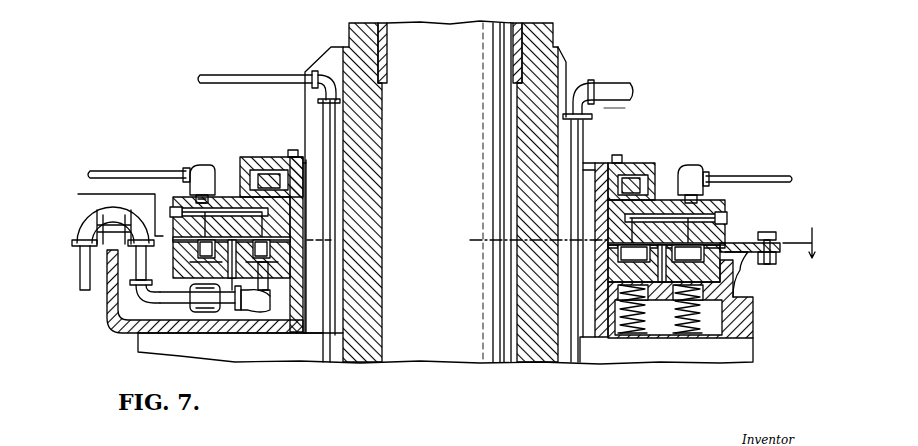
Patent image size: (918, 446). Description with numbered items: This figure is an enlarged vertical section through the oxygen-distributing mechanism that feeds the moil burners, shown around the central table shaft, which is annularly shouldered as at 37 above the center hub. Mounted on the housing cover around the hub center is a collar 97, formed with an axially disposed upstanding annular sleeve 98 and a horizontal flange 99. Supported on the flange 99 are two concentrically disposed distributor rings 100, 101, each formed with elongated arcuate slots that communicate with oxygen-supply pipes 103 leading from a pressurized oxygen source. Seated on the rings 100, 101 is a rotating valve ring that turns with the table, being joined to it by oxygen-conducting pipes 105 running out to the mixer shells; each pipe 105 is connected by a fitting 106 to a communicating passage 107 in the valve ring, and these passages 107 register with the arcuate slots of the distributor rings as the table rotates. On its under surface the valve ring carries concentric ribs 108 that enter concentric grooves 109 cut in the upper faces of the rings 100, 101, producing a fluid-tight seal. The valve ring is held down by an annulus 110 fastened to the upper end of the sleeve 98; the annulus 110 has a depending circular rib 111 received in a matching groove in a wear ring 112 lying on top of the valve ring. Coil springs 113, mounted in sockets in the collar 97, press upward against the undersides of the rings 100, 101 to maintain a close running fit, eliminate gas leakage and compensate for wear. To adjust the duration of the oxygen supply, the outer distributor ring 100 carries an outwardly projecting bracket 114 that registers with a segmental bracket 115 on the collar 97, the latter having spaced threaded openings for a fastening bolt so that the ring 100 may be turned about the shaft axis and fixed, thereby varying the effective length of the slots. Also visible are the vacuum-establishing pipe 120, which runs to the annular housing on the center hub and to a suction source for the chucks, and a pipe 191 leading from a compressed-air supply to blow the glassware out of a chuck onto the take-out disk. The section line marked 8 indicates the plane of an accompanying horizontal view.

The section line 8- 8 is at (446, 222).
The annular shoulder 37 is at (407, 350).
The collar 97 is at (608, 335).
The annular upstanding sleeve 98 is at (303, 188).
The horizontal flange 99 is at (660, 309).
The outer distributor ring 100 is at (195, 282).
The distributor ring 101 is at (263, 290).
The oxygen-supply pipe 103 is at (80, 275).
The oxygen-conducting pipe 105 is at (145, 170).
The fitting 106 is at (199, 170).
The communicating passage 107 is at (230, 195).
The concentric rib 108 is at (232, 245).
The concentric groove 109 is at (270, 268).
The annulus 110 is at (642, 165).
The depending circular rib 111 is at (622, 162).
The wear ring 112 is at (613, 198).
The coil spring 113 is at (678, 333).
The bracket 114 is at (756, 275).
The segmental bracket 115 is at (740, 290).
The vacuum-establishing pipe 120 is at (606, 86).
The pipe 191 is at (241, 80).